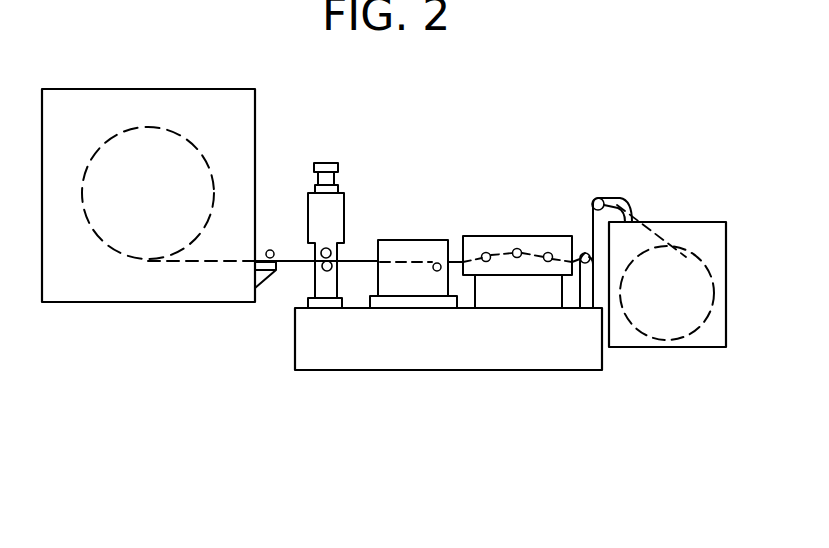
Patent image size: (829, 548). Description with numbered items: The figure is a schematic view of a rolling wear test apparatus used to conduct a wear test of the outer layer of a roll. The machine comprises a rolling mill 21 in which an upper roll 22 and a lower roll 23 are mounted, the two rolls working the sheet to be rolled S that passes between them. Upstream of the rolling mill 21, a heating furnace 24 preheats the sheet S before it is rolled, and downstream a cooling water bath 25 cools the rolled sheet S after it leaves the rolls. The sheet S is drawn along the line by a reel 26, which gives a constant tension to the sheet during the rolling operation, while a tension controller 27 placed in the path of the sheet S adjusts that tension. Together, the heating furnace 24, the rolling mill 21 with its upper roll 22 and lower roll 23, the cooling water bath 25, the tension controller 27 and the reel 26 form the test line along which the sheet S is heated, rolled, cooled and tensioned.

The rolling mill 21 is at (308, 208).
The upper roll 22 is at (331, 250).
The lower roll 23 is at (333, 270).
The heating furnace 24 is at (242, 122).
The cooling water bath 25 is at (410, 280).
The reel 26 is at (684, 233).
The tension controller 27 is at (512, 246).
The sheet to be rolled S is at (197, 263).